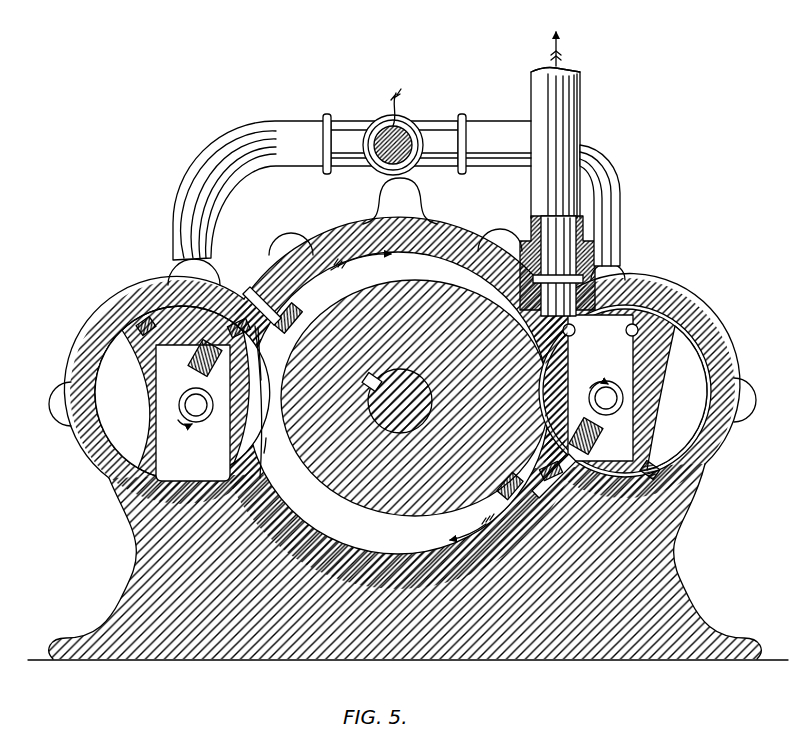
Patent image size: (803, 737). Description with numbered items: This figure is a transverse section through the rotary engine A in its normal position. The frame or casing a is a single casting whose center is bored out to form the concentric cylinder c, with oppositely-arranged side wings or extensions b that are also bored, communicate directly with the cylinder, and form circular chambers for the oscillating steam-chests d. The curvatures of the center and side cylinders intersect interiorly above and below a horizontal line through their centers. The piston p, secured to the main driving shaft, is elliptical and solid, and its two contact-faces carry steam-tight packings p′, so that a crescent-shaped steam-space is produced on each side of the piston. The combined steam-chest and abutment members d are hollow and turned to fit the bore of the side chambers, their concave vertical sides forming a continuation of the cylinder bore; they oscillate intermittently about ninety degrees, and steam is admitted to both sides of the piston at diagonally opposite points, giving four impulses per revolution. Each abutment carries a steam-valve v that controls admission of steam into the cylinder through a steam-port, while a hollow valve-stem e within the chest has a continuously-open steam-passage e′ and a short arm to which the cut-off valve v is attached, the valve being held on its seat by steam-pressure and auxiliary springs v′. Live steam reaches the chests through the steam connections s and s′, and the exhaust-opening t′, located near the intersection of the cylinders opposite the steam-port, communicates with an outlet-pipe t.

The rotary engine A is at (401, 302).
The frame or casing a is at (132, 555).
The side wings or extensions b is at (102, 342).
The cylinder c is at (398, 403).
The steam-chest d is at (150, 420).
The slot in abutment piston d′ is at (397, 398).
The hollow valve-stem e is at (205, 397).
The steam-passage e′ is at (600, 372).
The piston p is at (384, 283).
The steam-tight packings p′ is at (262, 298).
The steam valve s is at (371, 116).
The steam pipe s′ is at (193, 157).
The outlet-pipe t is at (520, 182).
The exhaust-opening t′ is at (530, 300).
The steam-valve v is at (566, 426).
The auxiliary springs v′ is at (186, 350).